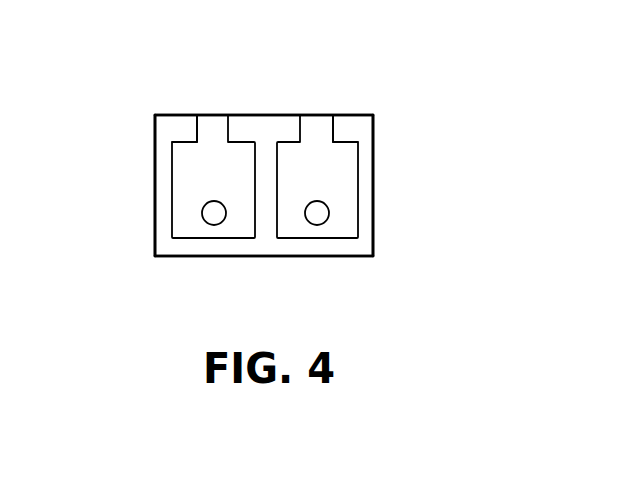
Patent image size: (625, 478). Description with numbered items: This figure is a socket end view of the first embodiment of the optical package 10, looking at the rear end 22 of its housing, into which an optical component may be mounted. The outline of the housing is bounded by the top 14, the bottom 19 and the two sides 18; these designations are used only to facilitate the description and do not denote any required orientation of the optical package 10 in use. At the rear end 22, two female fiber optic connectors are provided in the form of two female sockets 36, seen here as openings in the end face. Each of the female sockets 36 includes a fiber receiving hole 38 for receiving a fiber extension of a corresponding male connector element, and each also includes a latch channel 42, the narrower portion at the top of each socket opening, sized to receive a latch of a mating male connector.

The optical package 10 is at (420, 42).
The top 14 is at (266, 115).
The sides 18 is at (155, 187).
The bottom 19 is at (266, 256).
The rear end 22 is at (358, 132).
The female sockets 36 is at (177, 198).
The fiber receiving hole 38 is at (214, 213).
The latch channel 42 is at (197, 133).